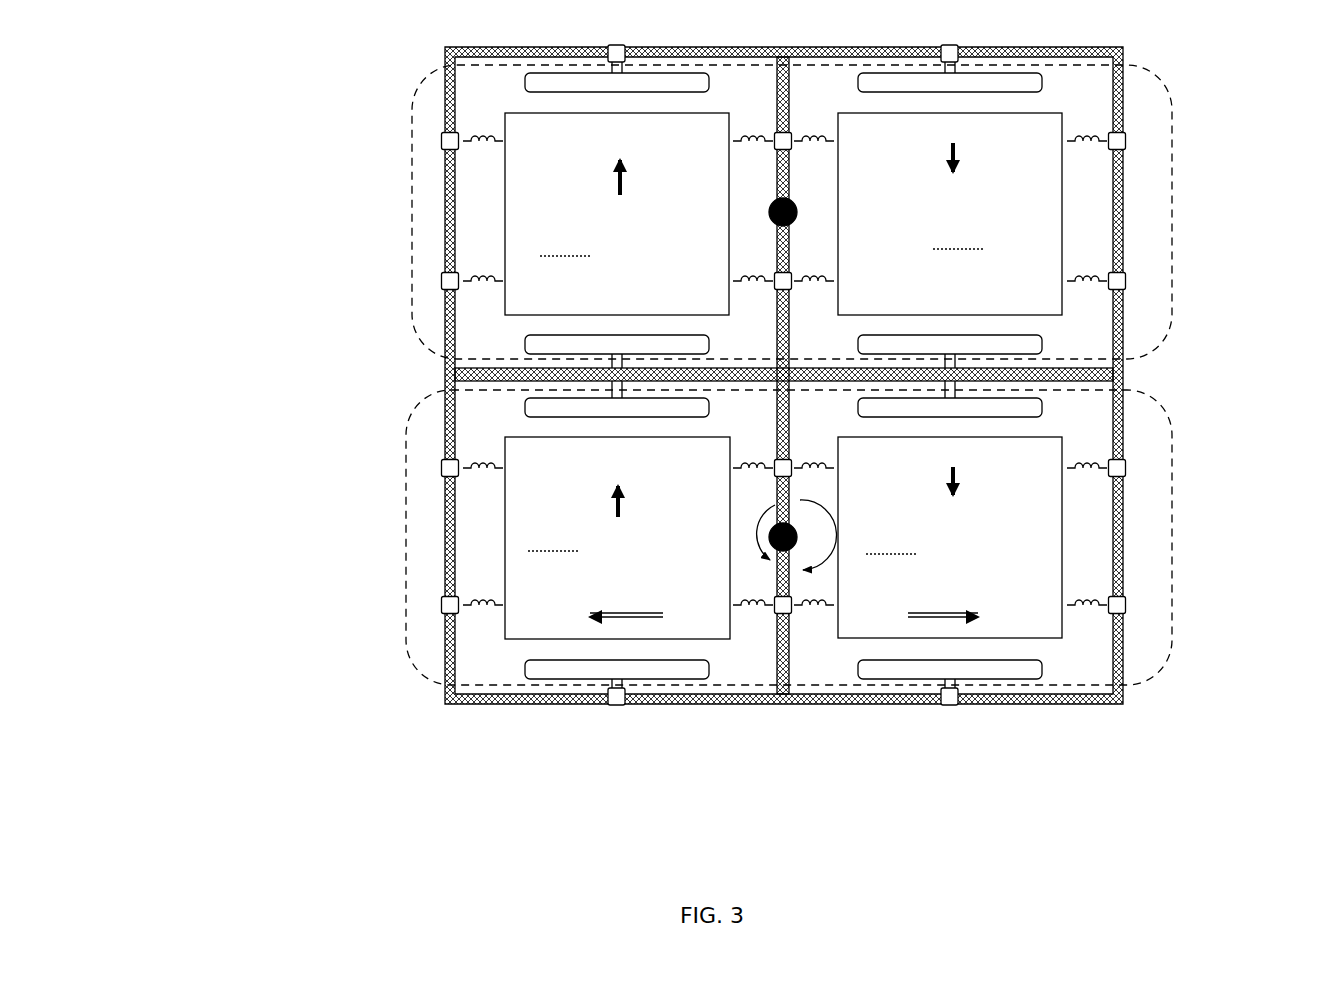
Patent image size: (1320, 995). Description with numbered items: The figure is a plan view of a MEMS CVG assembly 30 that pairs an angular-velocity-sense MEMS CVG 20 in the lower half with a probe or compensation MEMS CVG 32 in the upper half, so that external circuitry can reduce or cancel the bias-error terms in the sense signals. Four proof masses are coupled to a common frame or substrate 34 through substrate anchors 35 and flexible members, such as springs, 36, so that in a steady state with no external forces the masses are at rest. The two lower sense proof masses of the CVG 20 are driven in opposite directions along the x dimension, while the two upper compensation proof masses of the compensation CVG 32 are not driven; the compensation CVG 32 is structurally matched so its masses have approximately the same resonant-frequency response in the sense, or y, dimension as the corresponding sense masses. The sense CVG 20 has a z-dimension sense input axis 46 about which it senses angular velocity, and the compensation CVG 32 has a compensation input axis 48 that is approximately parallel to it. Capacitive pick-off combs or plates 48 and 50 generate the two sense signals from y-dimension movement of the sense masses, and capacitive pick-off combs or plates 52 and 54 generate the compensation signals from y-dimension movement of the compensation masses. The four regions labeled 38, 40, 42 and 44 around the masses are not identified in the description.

The MEMS CVG 20 is at (1082, 658).
The MEMS CVG assembly 30 is at (348, 412).
The compensation MEMS CVG 32 is at (1082, 322).
The frame or substrate 34 is at (443, 202).
The substrate anchor 35 is at (453, 151).
The flexible member 36 is at (481, 273).
The first proof mass M1 38 is at (752, 652).
The second proof mass M2 40 is at (823, 655).
The third proof mass M3 42 is at (733, 94).
The fourth proof mass M4 44 is at (819, 88).
The sense input axis 46 is at (795, 528).
The compensation input axis 48 is at (532, 672).
The capacitive pick-off combs or plates 50 is at (1040, 412).
The capacitive pick-off combs or plates 52 is at (527, 341).
The capacitive pick-off combs or plates 54 is at (1042, 90).